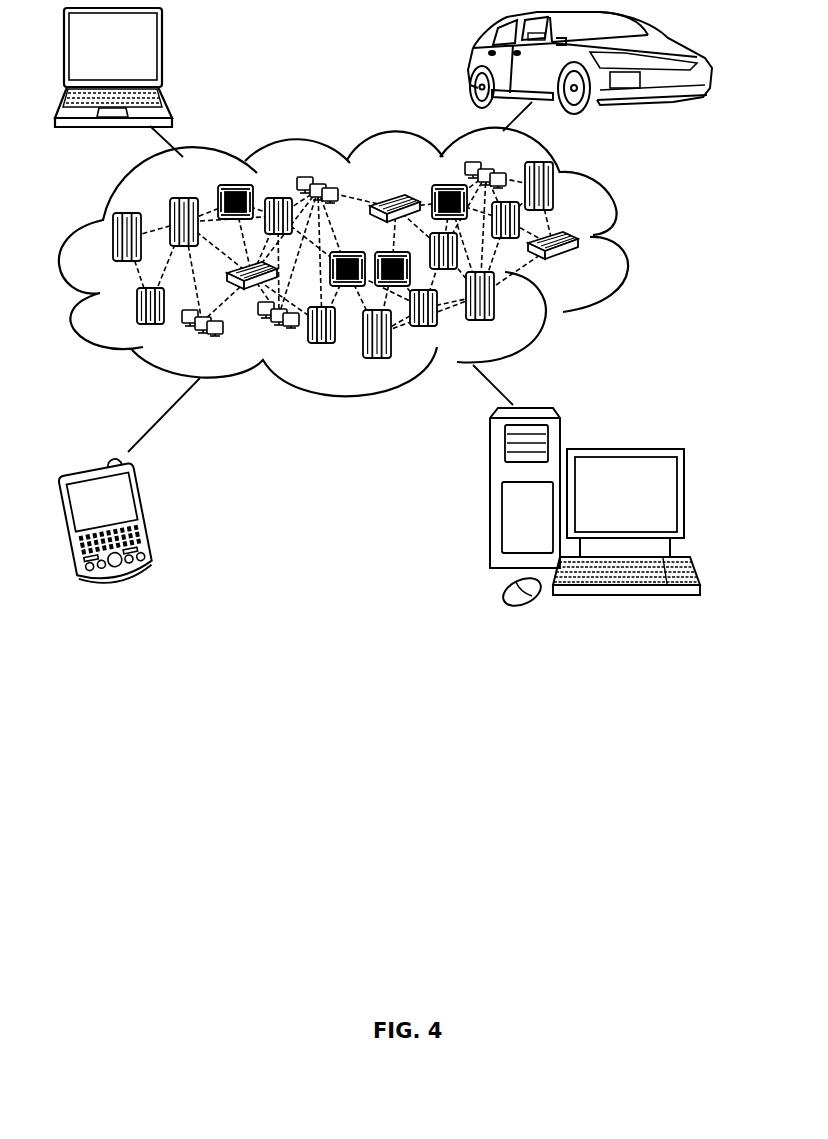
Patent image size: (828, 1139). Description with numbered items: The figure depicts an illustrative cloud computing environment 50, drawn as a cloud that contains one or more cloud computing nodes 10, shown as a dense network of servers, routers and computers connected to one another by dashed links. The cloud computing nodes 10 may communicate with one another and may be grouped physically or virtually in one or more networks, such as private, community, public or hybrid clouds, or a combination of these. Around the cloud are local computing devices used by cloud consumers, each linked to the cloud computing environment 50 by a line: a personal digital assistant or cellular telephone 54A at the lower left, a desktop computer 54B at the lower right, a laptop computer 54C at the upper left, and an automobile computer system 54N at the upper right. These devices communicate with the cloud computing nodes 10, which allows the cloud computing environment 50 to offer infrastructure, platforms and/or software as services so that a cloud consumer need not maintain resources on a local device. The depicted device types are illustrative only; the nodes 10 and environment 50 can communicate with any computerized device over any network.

The cloud computing node 10 is at (589, 271).
The cloud computing environment 50 is at (622, 246).
The personal digital assistant or cellular telephone 54A is at (155, 515).
The desktop computer 54B is at (625, 449).
The laptop computer 54C is at (162, 53).
The automobile computer system 54N is at (473, 62).